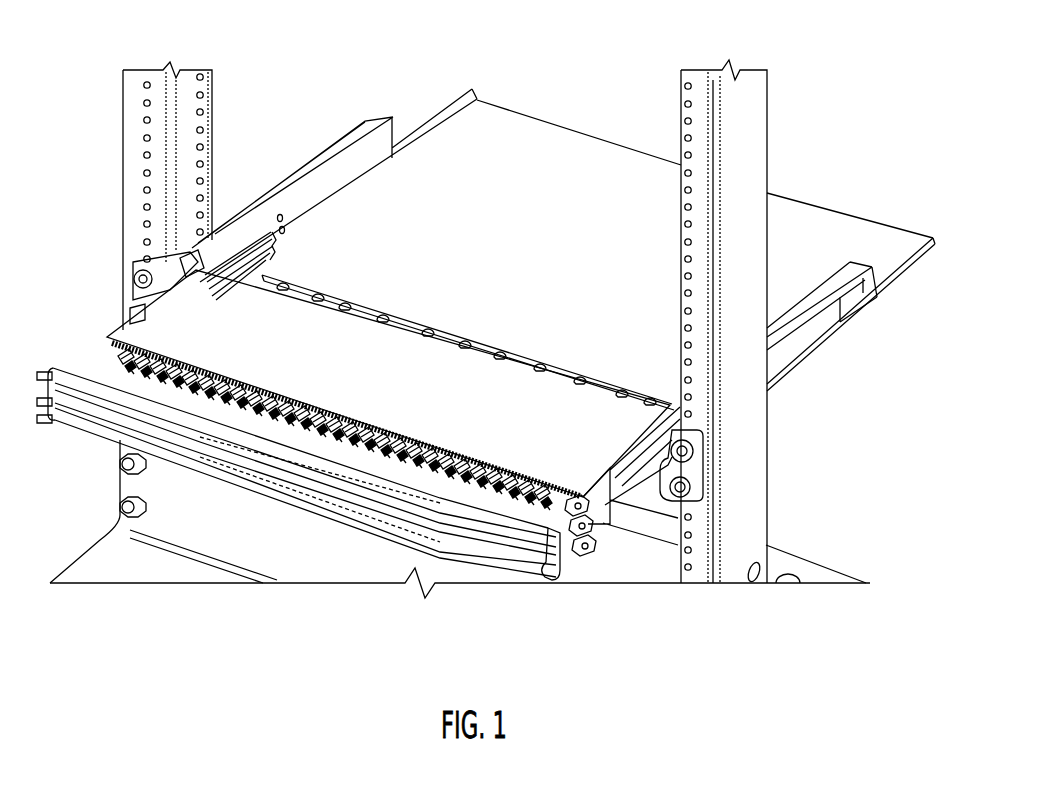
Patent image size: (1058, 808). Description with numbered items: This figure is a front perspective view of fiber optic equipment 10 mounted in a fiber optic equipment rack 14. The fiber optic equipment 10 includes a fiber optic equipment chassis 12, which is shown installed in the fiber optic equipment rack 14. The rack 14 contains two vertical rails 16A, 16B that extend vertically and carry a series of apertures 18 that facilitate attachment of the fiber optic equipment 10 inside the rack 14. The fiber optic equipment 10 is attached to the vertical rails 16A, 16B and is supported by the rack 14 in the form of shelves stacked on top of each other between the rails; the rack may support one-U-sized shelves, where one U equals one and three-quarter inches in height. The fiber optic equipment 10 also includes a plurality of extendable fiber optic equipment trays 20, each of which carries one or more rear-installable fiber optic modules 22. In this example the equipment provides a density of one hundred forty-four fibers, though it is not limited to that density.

The fiber optic equipment 10 is at (410, 97).
The fiber optic equipment chassis 12 is at (820, 354).
The fiber optic equipment rack 14 is at (778, 80).
The vertical rail 16A is at (213, 100).
The vertical rail 16B is at (770, 165).
The apertures 18 is at (144, 155).
The extendable fiber optic equipment trays 20 is at (587, 567).
The rear-installable fiber optic modules 22 is at (512, 345).